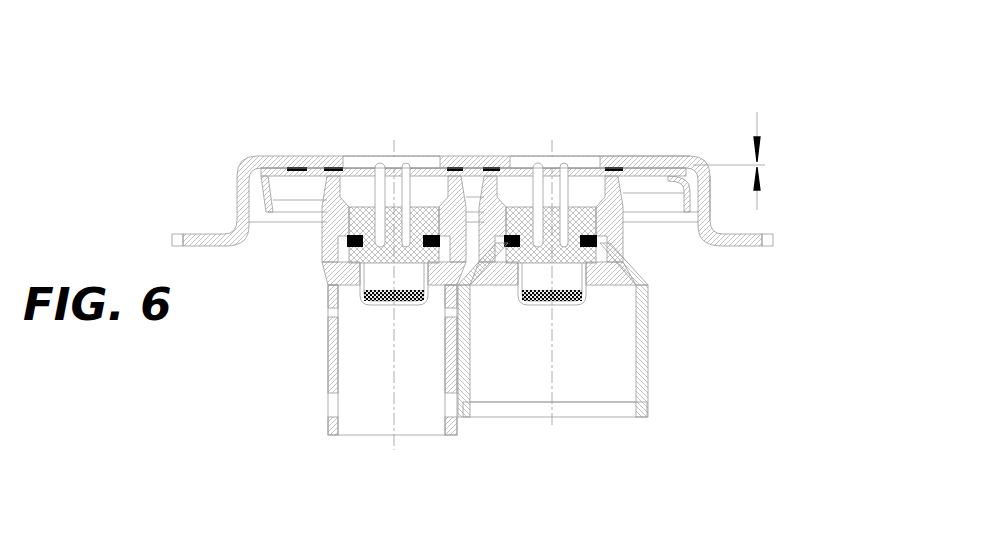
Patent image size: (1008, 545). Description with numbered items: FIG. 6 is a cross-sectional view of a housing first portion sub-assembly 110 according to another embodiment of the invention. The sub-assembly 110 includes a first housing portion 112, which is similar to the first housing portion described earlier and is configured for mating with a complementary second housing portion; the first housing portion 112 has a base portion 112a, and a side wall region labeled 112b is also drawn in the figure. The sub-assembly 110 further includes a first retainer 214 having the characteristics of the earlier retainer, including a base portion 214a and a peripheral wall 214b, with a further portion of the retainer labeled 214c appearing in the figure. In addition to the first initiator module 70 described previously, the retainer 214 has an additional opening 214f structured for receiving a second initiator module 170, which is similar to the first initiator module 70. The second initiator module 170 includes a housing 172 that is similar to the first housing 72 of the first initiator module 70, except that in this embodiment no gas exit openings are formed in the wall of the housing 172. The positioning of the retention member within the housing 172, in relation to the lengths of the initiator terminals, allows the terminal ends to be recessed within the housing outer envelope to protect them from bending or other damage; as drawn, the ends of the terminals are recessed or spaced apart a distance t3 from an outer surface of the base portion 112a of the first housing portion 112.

The housing first portion sub-assembly 110 is at (529, 245).
The first housing portion 112 is at (506, 144).
The base portion 112a is at (643, 156).
The bracket side wall 112b is at (703, 180).
The distance t3 is at (750, 156).
The first retainer 214 is at (511, 161).
The base portion 214a is at (280, 155).
The peripheral wall 214b is at (322, 193).
The end lip 214c is at (697, 220).
The additional opening 214f is at (520, 168).
The first housing 72 is at (327, 328).
The first initiator module 70 is at (340, 432).
The housing 172 is at (647, 307).
The second initiator module 170 is at (645, 403).